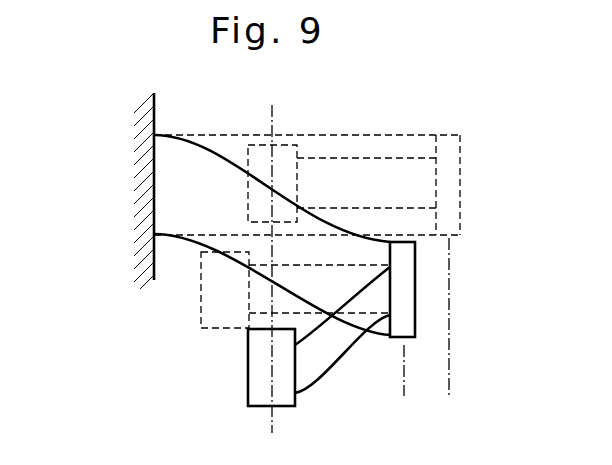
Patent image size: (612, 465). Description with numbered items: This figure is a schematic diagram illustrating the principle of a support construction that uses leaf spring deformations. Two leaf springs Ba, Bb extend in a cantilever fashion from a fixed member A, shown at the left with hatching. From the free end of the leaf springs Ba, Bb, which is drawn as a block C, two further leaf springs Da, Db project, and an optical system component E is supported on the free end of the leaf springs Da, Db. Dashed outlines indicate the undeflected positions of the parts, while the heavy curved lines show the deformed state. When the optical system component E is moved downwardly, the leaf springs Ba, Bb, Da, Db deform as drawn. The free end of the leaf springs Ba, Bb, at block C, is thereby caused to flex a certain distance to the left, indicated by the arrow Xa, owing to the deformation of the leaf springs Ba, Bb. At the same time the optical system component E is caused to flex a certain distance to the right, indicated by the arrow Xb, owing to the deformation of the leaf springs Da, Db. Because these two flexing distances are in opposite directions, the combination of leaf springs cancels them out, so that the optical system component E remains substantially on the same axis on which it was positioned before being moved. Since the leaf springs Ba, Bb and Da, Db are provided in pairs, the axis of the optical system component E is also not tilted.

The fixed member A is at (149, 222).
The leaf spring Ba is at (222, 153).
The leaf spring Bb is at (193, 234).
The block C is at (433, 317).
The leaf spring Da is at (331, 316).
The leaf spring Db is at (343, 361).
The optical system component E is at (285, 397).
The displacement direction of block C Xa is at (495, 223).
The displacement direction of block E Xb is at (218, 386).